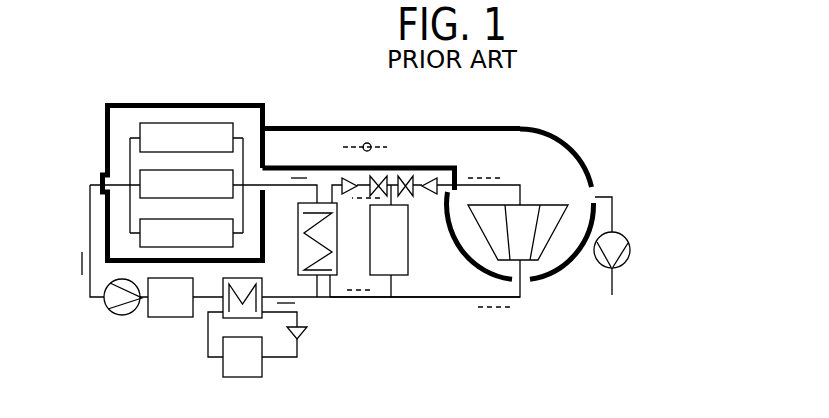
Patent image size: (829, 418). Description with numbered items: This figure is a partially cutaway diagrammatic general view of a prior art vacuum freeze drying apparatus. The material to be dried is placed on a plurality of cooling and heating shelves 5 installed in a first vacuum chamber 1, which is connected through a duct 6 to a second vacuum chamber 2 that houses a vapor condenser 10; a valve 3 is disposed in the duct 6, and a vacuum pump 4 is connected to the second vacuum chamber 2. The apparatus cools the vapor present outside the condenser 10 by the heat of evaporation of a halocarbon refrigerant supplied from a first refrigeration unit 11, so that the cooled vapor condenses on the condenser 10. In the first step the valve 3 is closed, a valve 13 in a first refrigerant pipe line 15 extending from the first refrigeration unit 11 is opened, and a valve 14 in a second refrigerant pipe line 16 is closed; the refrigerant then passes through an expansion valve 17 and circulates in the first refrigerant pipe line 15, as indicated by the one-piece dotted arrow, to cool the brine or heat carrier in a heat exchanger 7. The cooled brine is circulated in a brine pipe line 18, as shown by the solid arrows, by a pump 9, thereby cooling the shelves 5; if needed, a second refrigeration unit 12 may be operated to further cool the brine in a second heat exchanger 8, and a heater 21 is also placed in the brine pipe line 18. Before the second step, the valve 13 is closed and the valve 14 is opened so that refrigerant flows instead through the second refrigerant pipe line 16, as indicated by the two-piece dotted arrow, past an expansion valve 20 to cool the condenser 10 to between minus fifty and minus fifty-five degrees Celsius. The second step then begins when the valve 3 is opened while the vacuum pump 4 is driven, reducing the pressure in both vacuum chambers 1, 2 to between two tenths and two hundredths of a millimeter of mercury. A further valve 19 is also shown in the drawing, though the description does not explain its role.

The first vacuum chamber 1 is at (244, 127).
The second vacuum chamber 2 is at (543, 153).
The valve 3 is at (374, 144).
The vacuum pump 4 is at (631, 245).
The cooling and heating shelves 5 is at (180, 147).
The duct 6 is at (325, 126).
The heat exchanger 7 is at (337, 247).
The second heat exchanger 8 is at (264, 278).
The pump 9 is at (120, 316).
The condenser 10 is at (549, 207).
The first refrigeration unit 11 is at (408, 265).
The second refrigeration unit 12 is at (240, 378).
The valve 13 is at (394, 172).
The valve 14 is at (413, 191).
The first refrigerant pipe line 15 is at (370, 300).
The second refrigerant pipe line 16 is at (453, 300).
The expansion valve 17 is at (340, 183).
The brine pipe line 18 is at (90, 220).
The relief valve 19 is at (300, 337).
The expansion valve 20 is at (443, 172).
The heater 21 is at (168, 318).